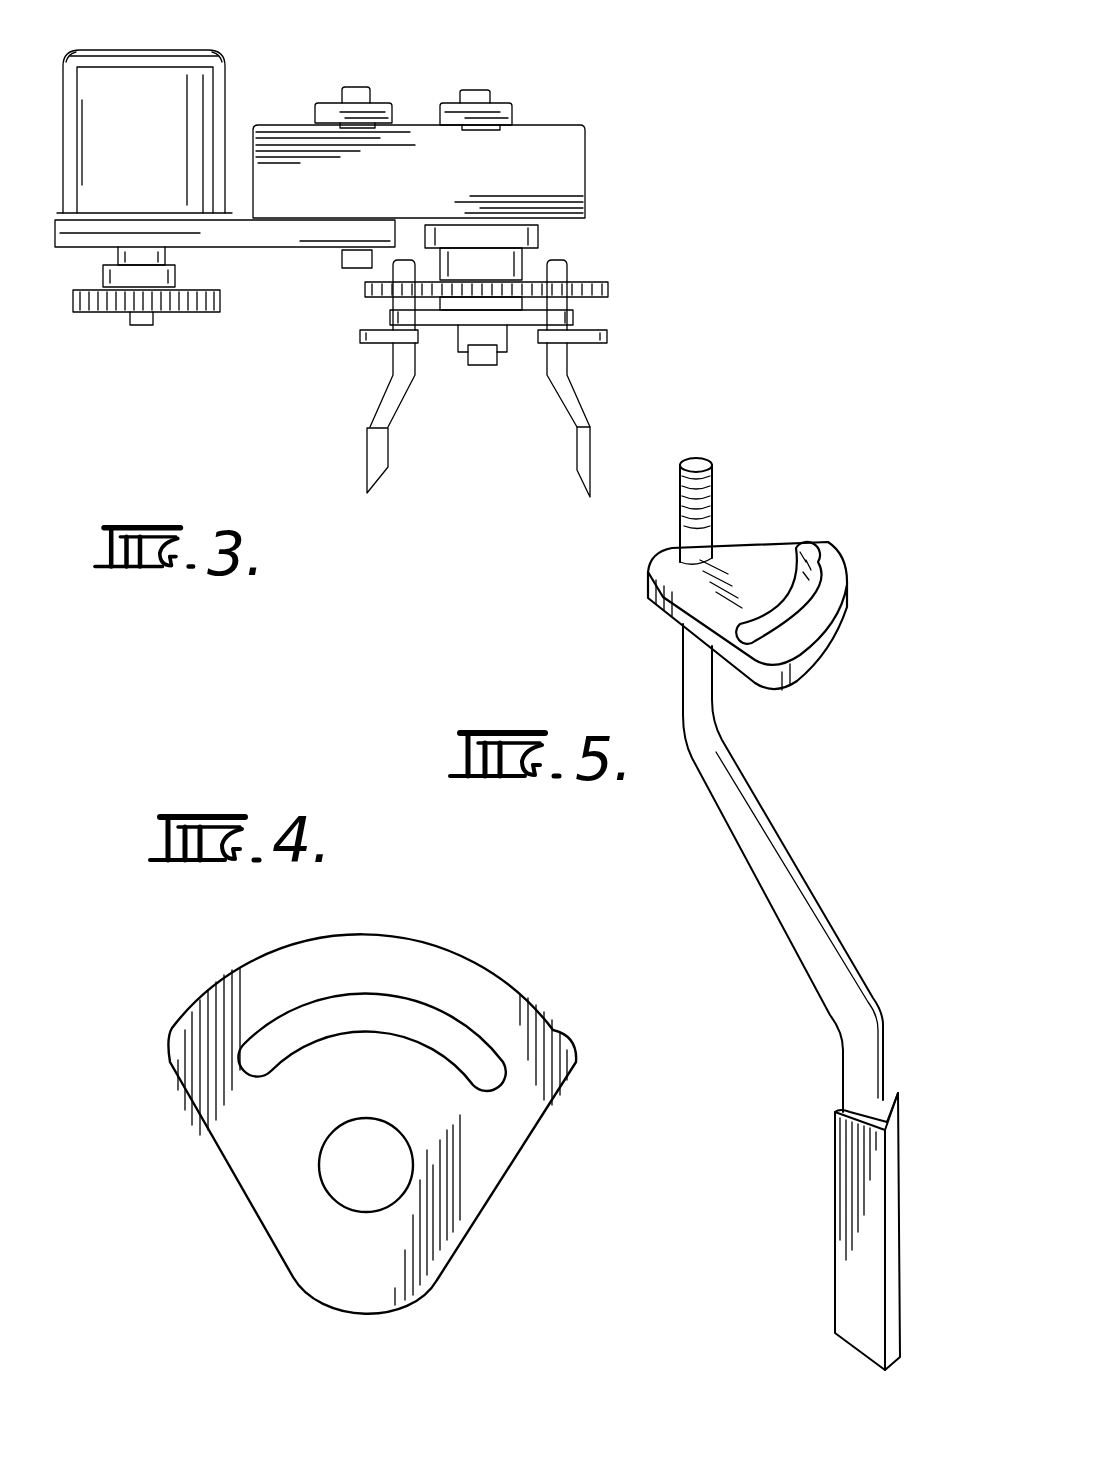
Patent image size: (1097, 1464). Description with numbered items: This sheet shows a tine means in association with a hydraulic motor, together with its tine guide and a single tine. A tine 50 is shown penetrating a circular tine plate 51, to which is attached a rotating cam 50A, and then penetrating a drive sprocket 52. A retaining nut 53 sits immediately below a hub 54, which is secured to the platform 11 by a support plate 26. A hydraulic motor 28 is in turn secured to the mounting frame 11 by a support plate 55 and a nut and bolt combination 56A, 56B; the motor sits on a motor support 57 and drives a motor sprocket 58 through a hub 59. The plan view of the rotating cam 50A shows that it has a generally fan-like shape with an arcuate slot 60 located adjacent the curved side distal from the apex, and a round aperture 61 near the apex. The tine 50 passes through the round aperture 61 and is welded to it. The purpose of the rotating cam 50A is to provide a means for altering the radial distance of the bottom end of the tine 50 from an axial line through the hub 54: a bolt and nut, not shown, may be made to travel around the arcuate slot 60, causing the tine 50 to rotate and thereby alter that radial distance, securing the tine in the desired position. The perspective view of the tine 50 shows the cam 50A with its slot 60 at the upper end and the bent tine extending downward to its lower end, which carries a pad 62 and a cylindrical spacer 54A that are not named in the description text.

In FIG. 3, the platform 11 is at (437, 190).
In FIG. 3, the support plate 26 is at (513, 110).
In FIG. 3, the hydraulic motor 28 is at (180, 97).
In FIG. 3, the tine 50 is at (570, 395).
In FIG. 5, the tine 50 is at (798, 895).
In FIG. 3, the rotating cam 50A is at (607, 340).
In FIG. 4, the rotating cam 50A is at (532, 1046).
In FIG. 5, the rotating cam 50A is at (763, 560).
In FIG. 3, the circular tine plate 51 is at (573, 318).
In FIG. 3, the drive sprocket 52 is at (608, 290).
In FIG. 3, the retaining nut 53 is at (483, 340).
In FIG. 3, the hub 54 is at (465, 263).
In FIG. 3, the spacer 54A is at (540, 245).
In FIG. 3, the support plate 55 is at (325, 108).
In FIG. 3, the nut and bolt combination 56A is at (355, 95).
In FIG. 3, the nut and bolt combination 56B is at (340, 257).
In FIG. 3, the motor support 57 is at (245, 230).
In FIG. 3, the motor sprocket 58 is at (167, 310).
In FIG. 3, the hub 59 is at (112, 307).
In FIG. 4, the arcuate slot 60 is at (288, 1042).
In FIG. 5, the arcuate slot 60 is at (803, 607).
In FIG. 4, the round aperture 61 is at (342, 1183).
In FIG. 3, the pad 62 is at (380, 458).
In FIG. 5, the pad 62 is at (870, 1182).